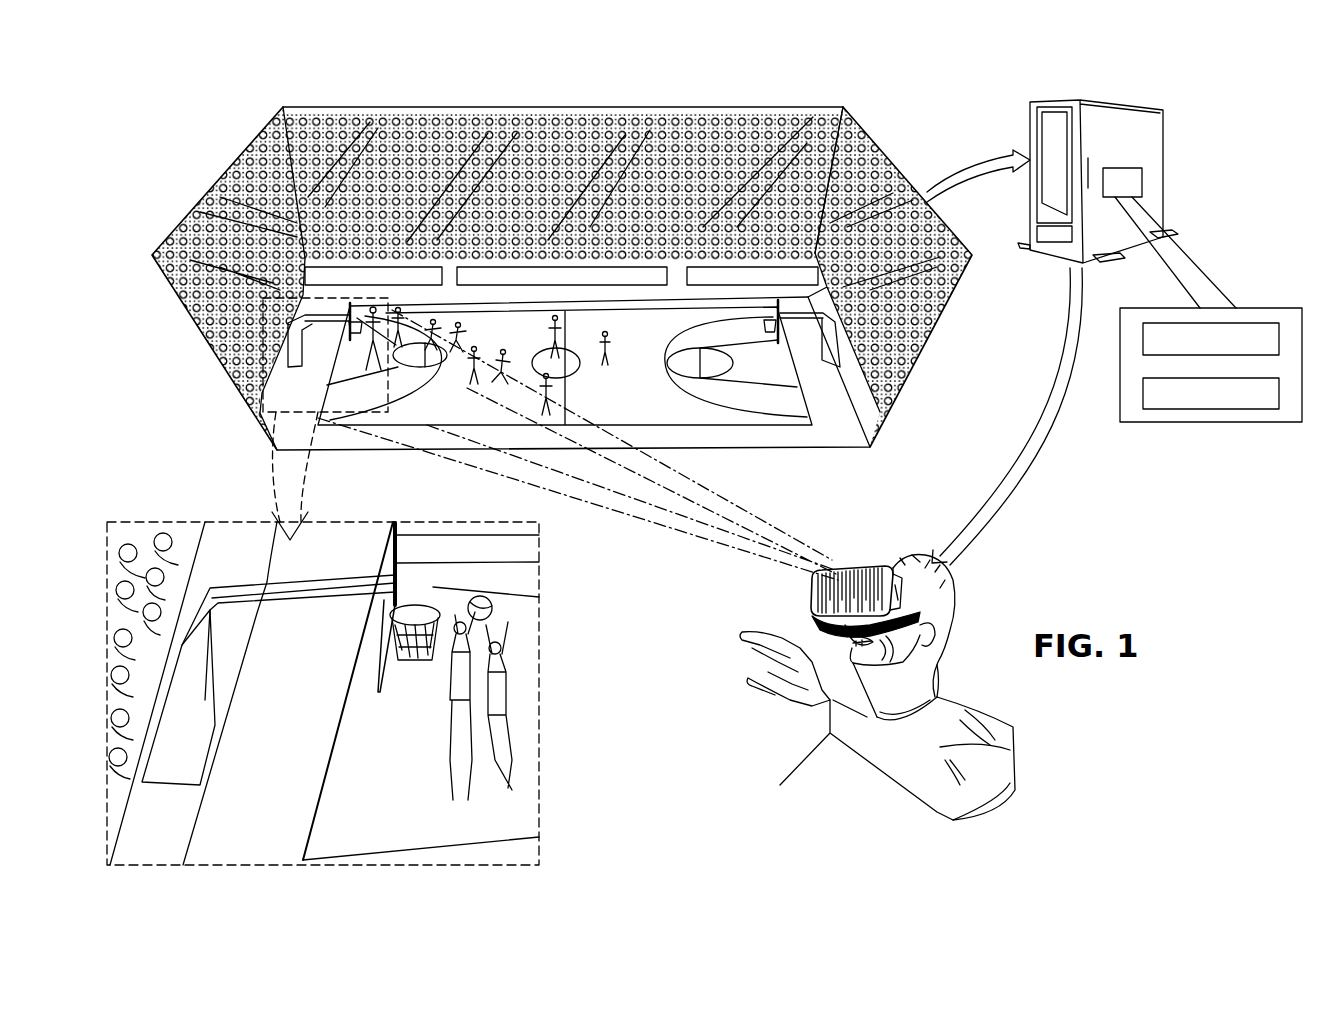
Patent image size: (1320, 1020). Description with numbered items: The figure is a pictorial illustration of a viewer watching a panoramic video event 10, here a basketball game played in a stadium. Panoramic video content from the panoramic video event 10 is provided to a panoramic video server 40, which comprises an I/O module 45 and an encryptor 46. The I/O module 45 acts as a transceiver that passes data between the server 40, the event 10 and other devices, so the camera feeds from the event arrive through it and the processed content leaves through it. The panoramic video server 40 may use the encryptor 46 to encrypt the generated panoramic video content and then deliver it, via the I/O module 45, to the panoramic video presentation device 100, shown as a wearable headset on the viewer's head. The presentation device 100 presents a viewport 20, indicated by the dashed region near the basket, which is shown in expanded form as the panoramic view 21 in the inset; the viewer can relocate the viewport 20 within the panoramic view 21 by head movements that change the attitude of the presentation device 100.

The panoramic video event 10 is at (250, 143).
The viewport 20 is at (263, 440).
The panoramic view 21 is at (540, 737).
The panoramic video server 40 is at (1163, 168).
The I/O module 45 is at (1143, 333).
The encryptor 46 is at (1143, 390).
The panoramic video presentation device 100 is at (860, 570).